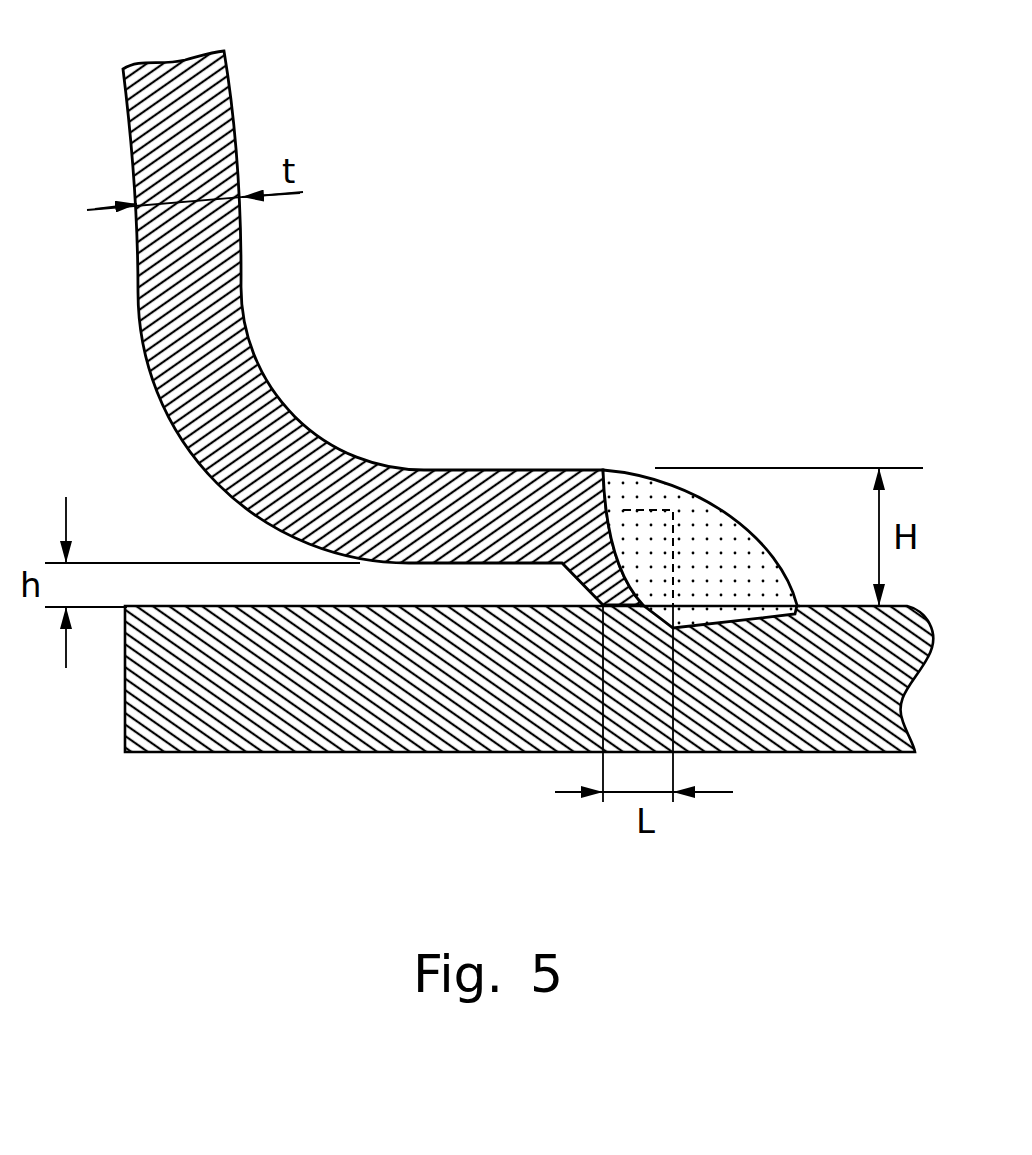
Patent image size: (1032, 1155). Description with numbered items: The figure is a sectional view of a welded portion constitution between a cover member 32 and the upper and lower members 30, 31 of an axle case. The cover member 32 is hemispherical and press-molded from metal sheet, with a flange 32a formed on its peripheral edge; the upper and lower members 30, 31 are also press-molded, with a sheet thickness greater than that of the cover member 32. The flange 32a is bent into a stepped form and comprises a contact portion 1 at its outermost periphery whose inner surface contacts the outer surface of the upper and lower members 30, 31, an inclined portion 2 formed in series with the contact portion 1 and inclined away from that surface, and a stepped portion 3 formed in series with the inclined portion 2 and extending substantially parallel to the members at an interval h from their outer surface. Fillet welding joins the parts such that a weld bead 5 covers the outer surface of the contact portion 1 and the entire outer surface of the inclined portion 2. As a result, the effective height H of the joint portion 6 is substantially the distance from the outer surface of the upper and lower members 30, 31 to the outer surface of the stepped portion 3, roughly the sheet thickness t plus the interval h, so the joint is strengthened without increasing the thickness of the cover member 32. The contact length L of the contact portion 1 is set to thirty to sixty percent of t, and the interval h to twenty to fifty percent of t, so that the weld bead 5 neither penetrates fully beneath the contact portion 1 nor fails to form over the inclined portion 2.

The contact portion 1 is at (657, 562).
The inclined portion 2 is at (622, 490).
The stepped portion 3 is at (497, 488).
The weld bead 5 is at (723, 549).
The joint portion 6 is at (724, 491).
The upper member 30 is at (529, 734).
The lower member 31 is at (332, 755).
The cover member 32 is at (383, 312).
The flange 32a is at (383, 328).